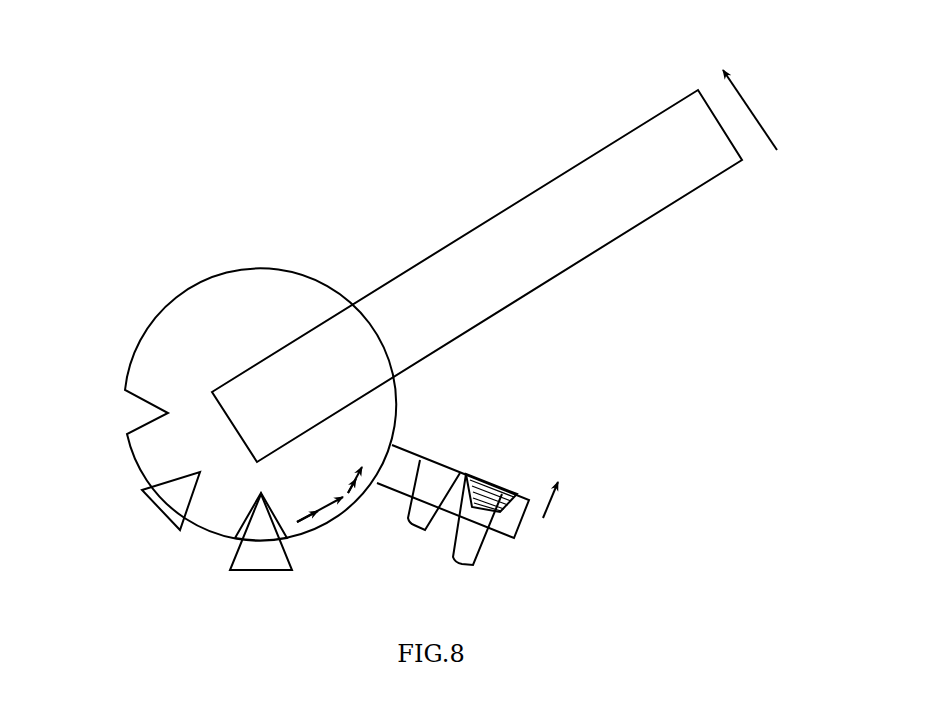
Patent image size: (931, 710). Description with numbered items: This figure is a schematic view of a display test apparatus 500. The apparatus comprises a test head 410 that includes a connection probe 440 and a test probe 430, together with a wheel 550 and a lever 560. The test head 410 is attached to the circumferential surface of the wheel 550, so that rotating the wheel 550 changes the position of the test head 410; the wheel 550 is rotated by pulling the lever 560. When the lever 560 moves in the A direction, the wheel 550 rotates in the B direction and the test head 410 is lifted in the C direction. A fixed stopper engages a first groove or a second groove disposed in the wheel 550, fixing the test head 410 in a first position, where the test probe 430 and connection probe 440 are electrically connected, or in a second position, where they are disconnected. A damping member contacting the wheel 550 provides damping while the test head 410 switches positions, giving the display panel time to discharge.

The display test apparatus 500 is at (160, 184).
The wheel 550 is at (243, 441).
The lever 560 is at (494, 249).
The test head 410 is at (395, 458).
The test probe 430 is at (483, 555).
The connection probe 440 is at (408, 527).